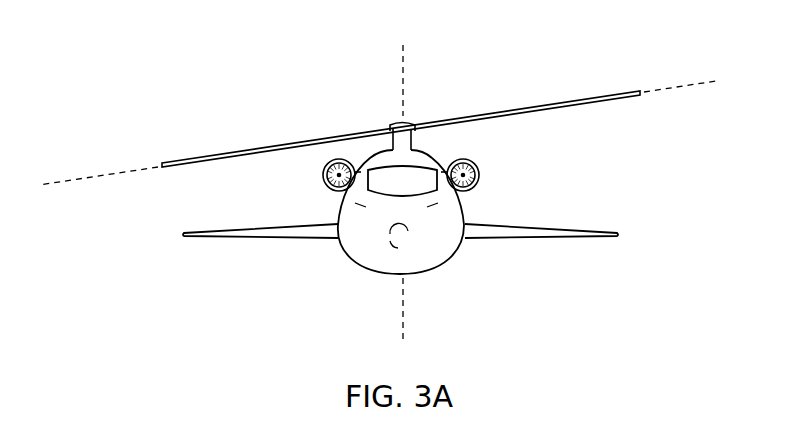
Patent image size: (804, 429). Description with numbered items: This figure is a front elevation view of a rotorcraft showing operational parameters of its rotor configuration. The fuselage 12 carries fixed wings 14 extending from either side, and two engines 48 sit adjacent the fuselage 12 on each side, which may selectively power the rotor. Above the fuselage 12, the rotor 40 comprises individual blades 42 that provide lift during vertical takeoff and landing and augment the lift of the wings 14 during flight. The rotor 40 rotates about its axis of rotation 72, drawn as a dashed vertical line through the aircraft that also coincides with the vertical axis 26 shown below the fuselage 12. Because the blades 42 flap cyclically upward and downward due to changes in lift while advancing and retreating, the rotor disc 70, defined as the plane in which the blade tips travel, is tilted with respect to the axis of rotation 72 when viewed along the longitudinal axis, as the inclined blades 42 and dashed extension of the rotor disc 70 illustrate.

The fuselage 12 is at (354, 261).
The wings 14 is at (270, 239).
The vertical axis 26 is at (405, 320).
The rotor 40 is at (357, 119).
The blades 42 is at (226, 155).
The engines 48 is at (323, 177).
The rotor disc 70 is at (686, 85).
The axis of rotation 72 is at (405, 72).